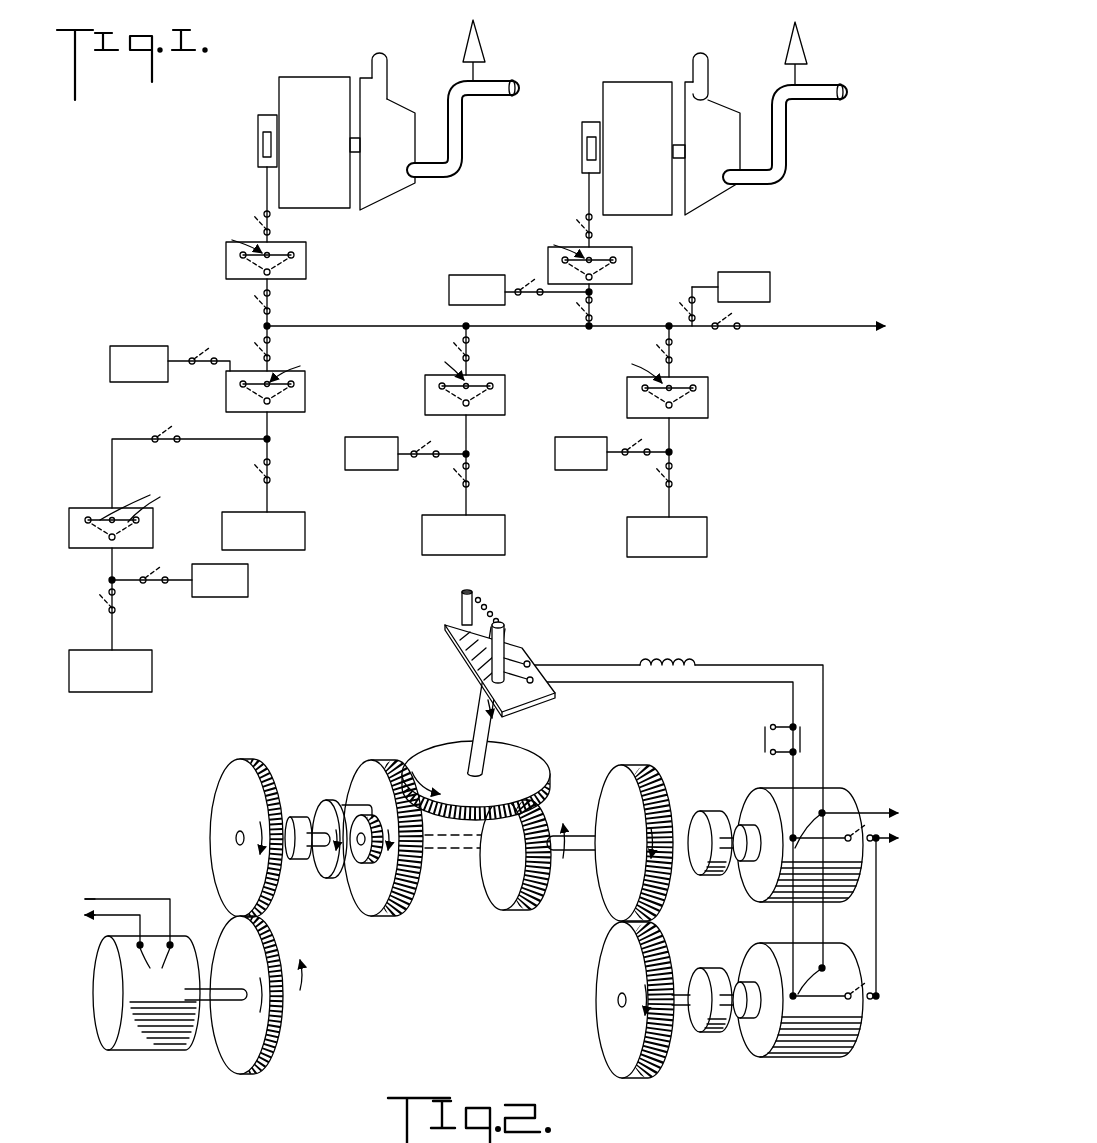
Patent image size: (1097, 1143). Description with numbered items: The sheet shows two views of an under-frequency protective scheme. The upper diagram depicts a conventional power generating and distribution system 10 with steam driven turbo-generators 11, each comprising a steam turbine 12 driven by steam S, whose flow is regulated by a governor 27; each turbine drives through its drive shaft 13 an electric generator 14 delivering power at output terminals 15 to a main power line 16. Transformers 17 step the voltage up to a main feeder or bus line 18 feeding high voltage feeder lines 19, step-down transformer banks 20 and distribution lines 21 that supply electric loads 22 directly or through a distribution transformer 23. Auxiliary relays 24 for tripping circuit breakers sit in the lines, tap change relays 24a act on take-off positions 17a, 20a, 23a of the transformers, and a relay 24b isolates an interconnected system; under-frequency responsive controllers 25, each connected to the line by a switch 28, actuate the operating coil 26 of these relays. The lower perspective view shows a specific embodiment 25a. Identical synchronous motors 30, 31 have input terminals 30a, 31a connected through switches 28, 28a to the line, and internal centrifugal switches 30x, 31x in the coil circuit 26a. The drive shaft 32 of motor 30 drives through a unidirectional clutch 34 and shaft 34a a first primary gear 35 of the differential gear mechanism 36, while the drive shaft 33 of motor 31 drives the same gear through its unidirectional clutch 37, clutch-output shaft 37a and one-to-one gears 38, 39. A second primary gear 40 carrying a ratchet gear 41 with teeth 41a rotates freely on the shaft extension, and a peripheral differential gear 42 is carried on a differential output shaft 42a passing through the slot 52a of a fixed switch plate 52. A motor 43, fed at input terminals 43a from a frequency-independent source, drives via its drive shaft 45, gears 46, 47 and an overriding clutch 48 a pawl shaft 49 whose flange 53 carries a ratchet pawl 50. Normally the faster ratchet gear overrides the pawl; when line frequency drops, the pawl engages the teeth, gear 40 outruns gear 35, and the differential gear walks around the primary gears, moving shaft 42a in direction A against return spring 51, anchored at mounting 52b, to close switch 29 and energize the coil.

In FIG. 1, the electric power generating and distribution system 10 is at (163, 236).
In FIG. 1, the steam driven turbo-generator 11 is at (350, 60).
In FIG. 1, the steam turbine 12 is at (403, 158).
In FIG. 1, the drive shaft 13 is at (362, 142).
In FIG. 1, the electric generator 14 is at (324, 153).
In FIG. 1, the output terminals 15 is at (258, 149).
In FIG. 1, the main power line 16 is at (267, 183).
In FIG. 1, the transformer 17 is at (307, 256).
In FIG. 1, the transformer take-off position 17a is at (390, 237).
In FIG. 1, the main feeder or bus line 18 is at (420, 326).
In FIG. 1, the high voltage feeder line 19 is at (262, 331).
In FIG. 1, the step-down transformer bank 20 is at (307, 389).
In FIG. 1, the transformer take-off position 20a is at (466, 365).
In FIG. 1, the distribution line 21 is at (272, 436).
In FIG. 1, the electric load 22 is at (274, 540).
In FIG. 1, the distribution transformer 23 is at (154, 531).
In FIG. 1, the transformer take-off position 23a is at (134, 499).
In FIG. 1, the auxiliary relay 24 is at (272, 222).
In FIG. 1, the tap change auxiliary relay 24a is at (276, 266).
In FIG. 1, the interconnection auxiliary relay 24b is at (738, 332).
In FIG. 1, the under-frequency responsive controller 25 is at (149, 373).
In FIG. 2, the frequency-responsive control apparatus 25a is at (405, 728).
In FIG. 2, the relay operating coil 26 is at (679, 659).
In FIG. 2, the coil circuit 26a is at (612, 663).
In FIG. 1, the governor 27 is at (480, 48).
In FIG. 1, the switch 28 is at (202, 368).
In FIG. 2, the switch 28 is at (856, 848).
In FIG. 2, the switch 28a is at (852, 1005).
In FIG. 2, the switch 29 is at (531, 661).
In FIG. 2, the synchronous motor 30 is at (770, 903).
In FIG. 2, the electrical input terminals 30a is at (826, 810).
In FIG. 2, the centrifugal switch 30x is at (762, 740).
In FIG. 2, the synchronous motor 31 is at (772, 1057).
In FIG. 2, the electrical input terminals 31a is at (825, 966).
In FIG. 2, the centrifugal switch 31x is at (805, 739).
In FIG. 2, the drive shaft 32 is at (730, 868).
In FIG. 2, the drive shaft 33 is at (740, 1022).
In FIG. 2, the unidirectional clutch 34 is at (702, 812).
In FIG. 2, the shaft 34a is at (565, 835).
In FIG. 2, the first primary gear 35 is at (497, 888).
In FIG. 2, the differential gear mechanism 36 is at (446, 878).
In FIG. 2, the unidirectional clutch 37 is at (705, 1032).
In FIG. 2, the clutch-output shaft 37a is at (690, 990).
In FIG. 2, the gear 38 is at (628, 782).
In FIG. 2, the gear 39 is at (628, 1064).
In FIG. 2, the second primary gear 40 is at (380, 850).
In FIG. 2, the ratchet gear 41 is at (356, 852).
In FIG. 2, the ratchet gear teeth 41a is at (360, 847).
In FIG. 2, the differential gear 42 is at (543, 781).
In FIG. 2, the differential output shaft 42a is at (497, 734).
In FIG. 2, the motor 43 is at (135, 1051).
In FIG. 2, the input terminals 43a is at (130, 944).
In FIG. 2, the drive shaft 45 is at (228, 1003).
In FIG. 2, the gear 46 is at (240, 1052).
In FIG. 2, the gear 47 is at (216, 866).
In FIG. 2, the overriding clutch 48 is at (297, 815).
In FIG. 2, the pawl shaft 49 is at (316, 828).
In FIG. 2, the ratchet pawl 50 is at (350, 803).
In FIG. 2, the return spring 51 is at (490, 606).
In FIG. 2, the switch plate 52 is at (556, 696).
In FIG. 2, the slot 52a is at (492, 681).
In FIG. 2, the mounting 52b is at (462, 612).
In FIG. 2, the flange 53 is at (325, 877).
In FIG. 2, the arrow A is at (471, 712).
In FIG. 1, the steam S is at (380, 44).